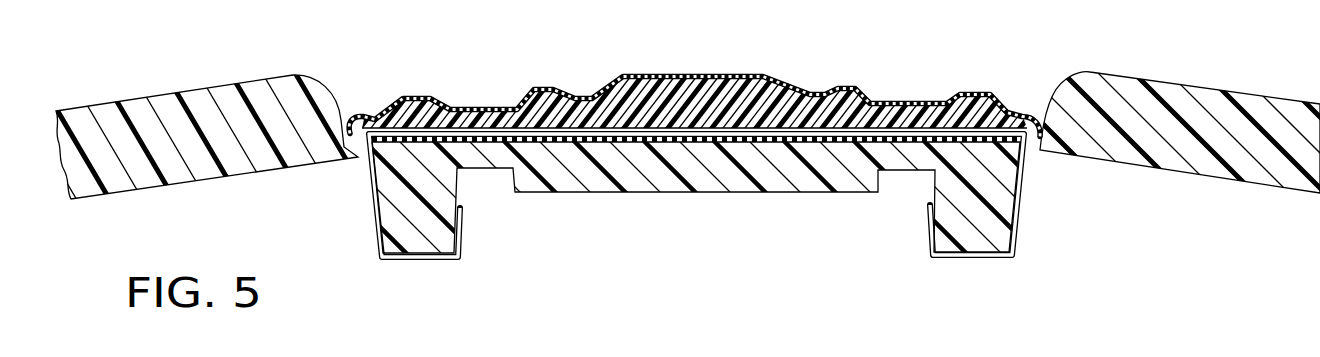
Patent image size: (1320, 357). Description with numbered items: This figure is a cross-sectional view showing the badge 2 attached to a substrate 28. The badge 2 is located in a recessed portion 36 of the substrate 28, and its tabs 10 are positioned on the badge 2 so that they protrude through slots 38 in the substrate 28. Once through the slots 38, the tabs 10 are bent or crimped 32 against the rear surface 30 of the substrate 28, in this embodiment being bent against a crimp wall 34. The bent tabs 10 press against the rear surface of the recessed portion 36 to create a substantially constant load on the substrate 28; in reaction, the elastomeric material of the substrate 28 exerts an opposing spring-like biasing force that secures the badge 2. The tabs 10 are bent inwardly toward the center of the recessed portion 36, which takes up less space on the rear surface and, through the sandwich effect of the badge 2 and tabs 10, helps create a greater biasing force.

The badge 2 is at (600, 72).
The tab 10 is at (375, 233).
The substrate 28 is at (1200, 87).
The rear surface 30 is at (782, 192).
The crimp 32 is at (467, 262).
The crimp wall 34 is at (405, 233).
The recessed portion 36 is at (1064, 97).
The slot 38 is at (362, 152).